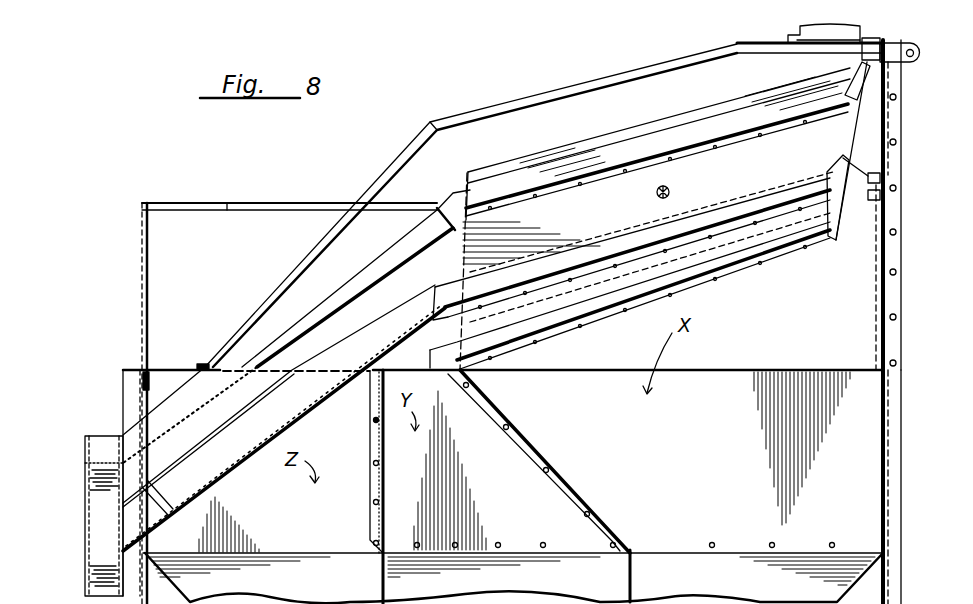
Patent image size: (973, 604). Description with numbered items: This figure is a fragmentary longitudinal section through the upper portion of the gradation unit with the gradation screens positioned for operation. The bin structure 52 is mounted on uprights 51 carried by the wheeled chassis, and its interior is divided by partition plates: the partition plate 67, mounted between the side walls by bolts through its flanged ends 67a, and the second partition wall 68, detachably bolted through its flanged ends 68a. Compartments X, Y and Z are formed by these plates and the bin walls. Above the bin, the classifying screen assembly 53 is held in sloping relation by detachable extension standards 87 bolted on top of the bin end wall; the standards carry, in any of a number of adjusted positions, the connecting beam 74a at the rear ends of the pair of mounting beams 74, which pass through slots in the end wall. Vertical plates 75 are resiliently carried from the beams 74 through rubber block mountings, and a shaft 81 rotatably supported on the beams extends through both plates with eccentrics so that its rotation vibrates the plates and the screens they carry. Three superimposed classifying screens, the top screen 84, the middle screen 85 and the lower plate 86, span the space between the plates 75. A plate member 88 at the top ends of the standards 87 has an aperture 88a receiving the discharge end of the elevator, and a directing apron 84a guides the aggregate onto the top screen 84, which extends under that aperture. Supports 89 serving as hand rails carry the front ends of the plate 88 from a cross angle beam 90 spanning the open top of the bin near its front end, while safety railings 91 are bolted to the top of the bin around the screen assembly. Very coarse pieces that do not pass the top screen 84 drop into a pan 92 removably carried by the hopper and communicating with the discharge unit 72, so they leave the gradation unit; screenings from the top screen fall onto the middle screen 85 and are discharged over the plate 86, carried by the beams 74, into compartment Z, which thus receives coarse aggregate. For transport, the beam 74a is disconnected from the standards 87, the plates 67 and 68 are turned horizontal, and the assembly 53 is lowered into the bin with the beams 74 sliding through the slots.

The uprights 51 is at (900, 534).
The bin structure 52 is at (747, 366).
The classifying screen assembly 53 is at (590, 135).
The partition plate 67 is at (528, 443).
The flanged ends 67a is at (520, 447).
The second partition wall 68 is at (381, 441).
The flanged ends 68a is at (355, 462).
The discharge unit 72 is at (85, 505).
The mounting beams 74 is at (205, 460).
The connecting beam 74a is at (872, 200).
The vertical plates 75 is at (658, 135).
The shaft 81 is at (671, 192).
The top screen 84 is at (515, 200).
The directing apron 84a is at (865, 92).
The middle screen 85 is at (490, 300).
The plate 86 is at (572, 318).
The extension standards 87 is at (900, 252).
The plate member 88 is at (745, 42).
The aperture 88a is at (832, 45).
The supports 89 is at (500, 110).
The cross angle beam 90 is at (203, 364).
The safety railings 91 is at (185, 205).
The pan 92 is at (353, 293).